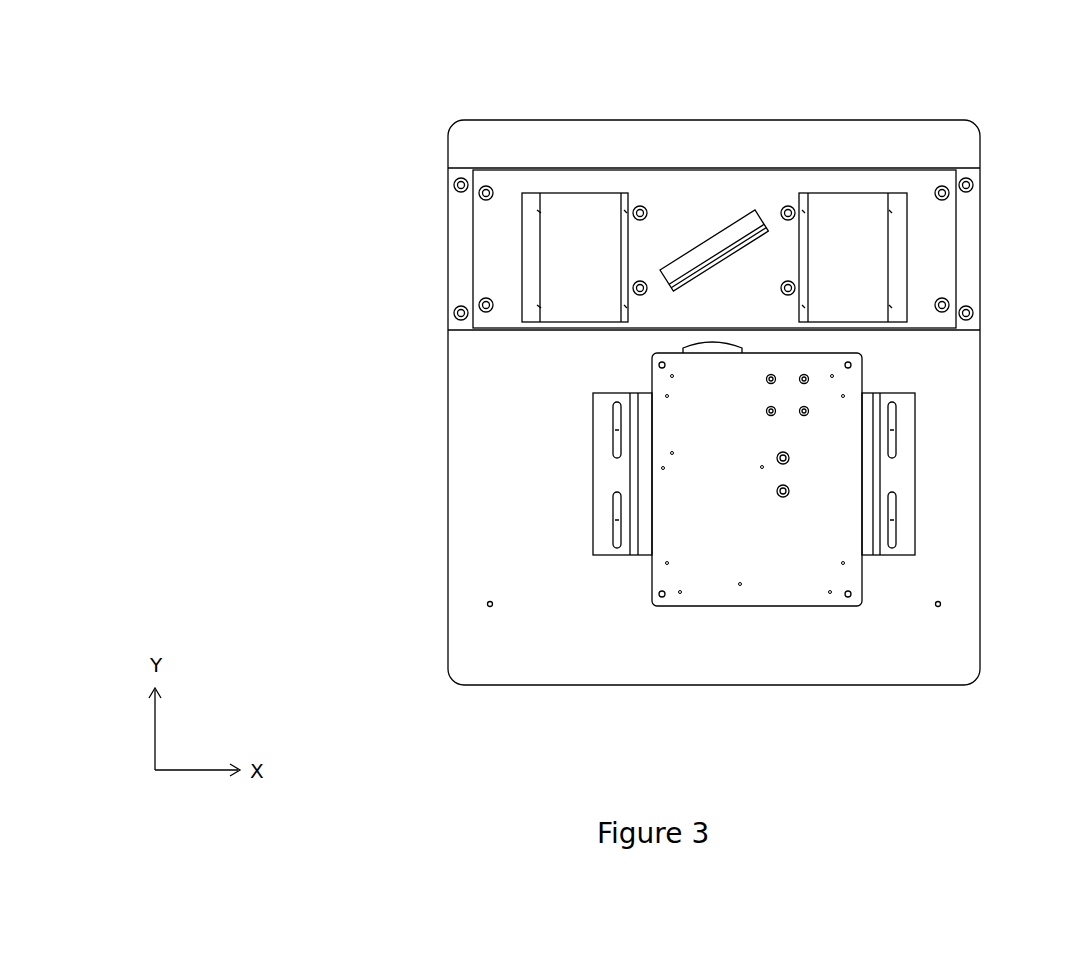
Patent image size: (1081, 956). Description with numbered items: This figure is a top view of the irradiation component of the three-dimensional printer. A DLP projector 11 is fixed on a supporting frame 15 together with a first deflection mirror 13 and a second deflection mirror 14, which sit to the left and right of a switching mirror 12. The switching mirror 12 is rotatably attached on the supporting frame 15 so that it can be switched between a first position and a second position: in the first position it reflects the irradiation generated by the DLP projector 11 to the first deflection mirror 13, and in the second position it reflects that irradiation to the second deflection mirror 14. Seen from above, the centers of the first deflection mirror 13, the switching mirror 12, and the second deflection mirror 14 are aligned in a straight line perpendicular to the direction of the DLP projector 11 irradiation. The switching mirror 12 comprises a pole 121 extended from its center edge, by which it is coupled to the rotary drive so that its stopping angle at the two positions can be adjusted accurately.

The DLP projector 11 is at (665, 428).
The switching mirror 12 is at (703, 167).
The pole 121 is at (707, 236).
The first deflection mirror 13 is at (568, 235).
The second deflection mirror 14 is at (870, 271).
The supporting frame 15 is at (483, 550).